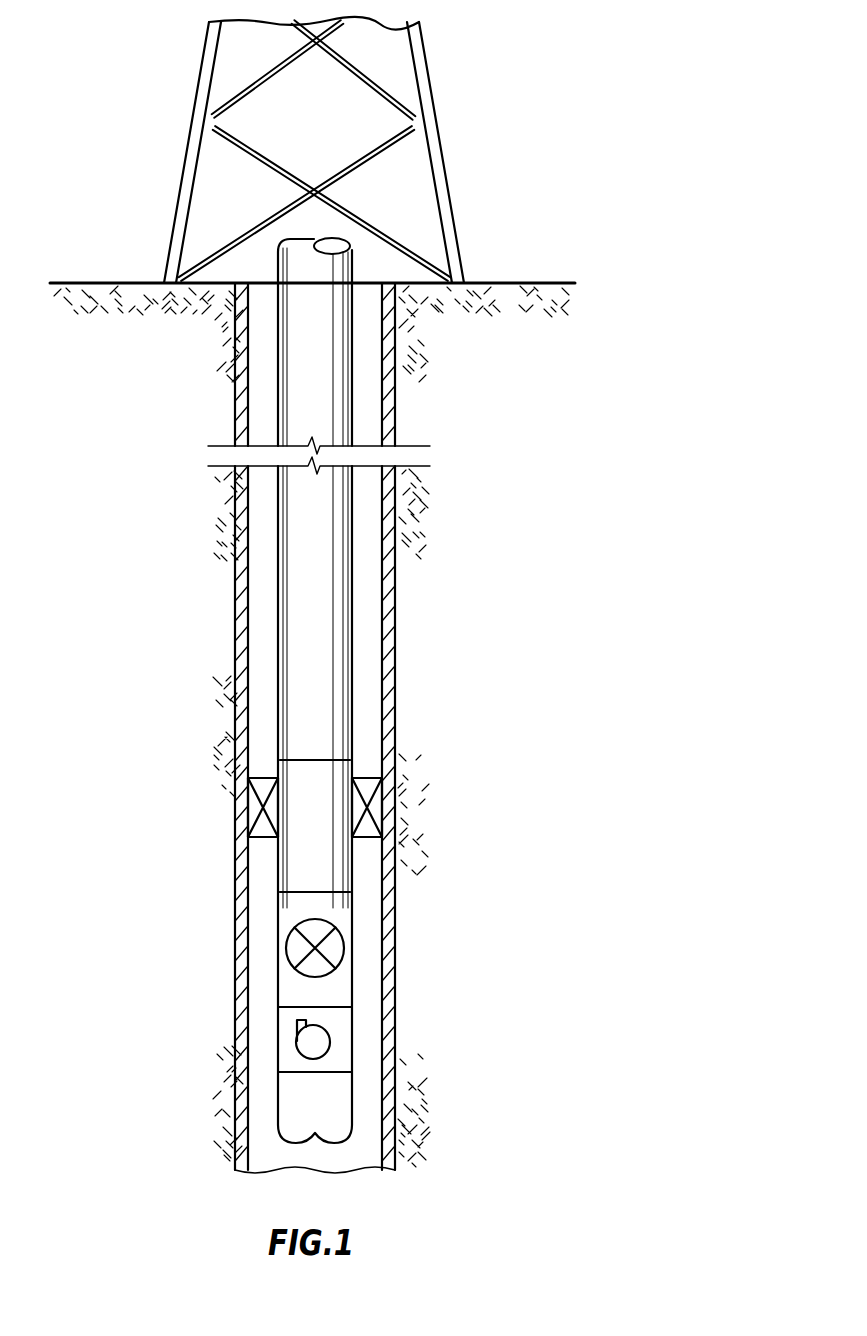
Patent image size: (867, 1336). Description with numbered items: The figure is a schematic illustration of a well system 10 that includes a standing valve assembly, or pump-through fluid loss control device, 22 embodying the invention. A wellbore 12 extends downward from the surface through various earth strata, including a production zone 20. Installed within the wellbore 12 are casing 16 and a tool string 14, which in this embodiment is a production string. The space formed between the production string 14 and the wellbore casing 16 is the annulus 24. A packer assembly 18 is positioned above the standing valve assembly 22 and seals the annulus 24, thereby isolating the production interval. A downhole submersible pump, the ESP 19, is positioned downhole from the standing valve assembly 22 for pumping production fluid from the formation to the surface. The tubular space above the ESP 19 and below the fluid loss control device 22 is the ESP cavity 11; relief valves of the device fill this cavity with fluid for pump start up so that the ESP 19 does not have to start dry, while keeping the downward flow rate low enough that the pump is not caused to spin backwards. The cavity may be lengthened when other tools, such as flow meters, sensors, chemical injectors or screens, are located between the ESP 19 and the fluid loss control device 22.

The well system 10 is at (609, 393).
The ESP cavity 11 is at (322, 993).
The wellbore 12 is at (395, 603).
The tool string 14 is at (277, 388).
The casing 16 is at (397, 665).
The packer assembly 18 is at (382, 807).
The ESP 19 is at (330, 1040).
The production zone 20 is at (408, 1122).
The standing valve assembly 22 is at (278, 947).
The annulus 24 is at (260, 994).